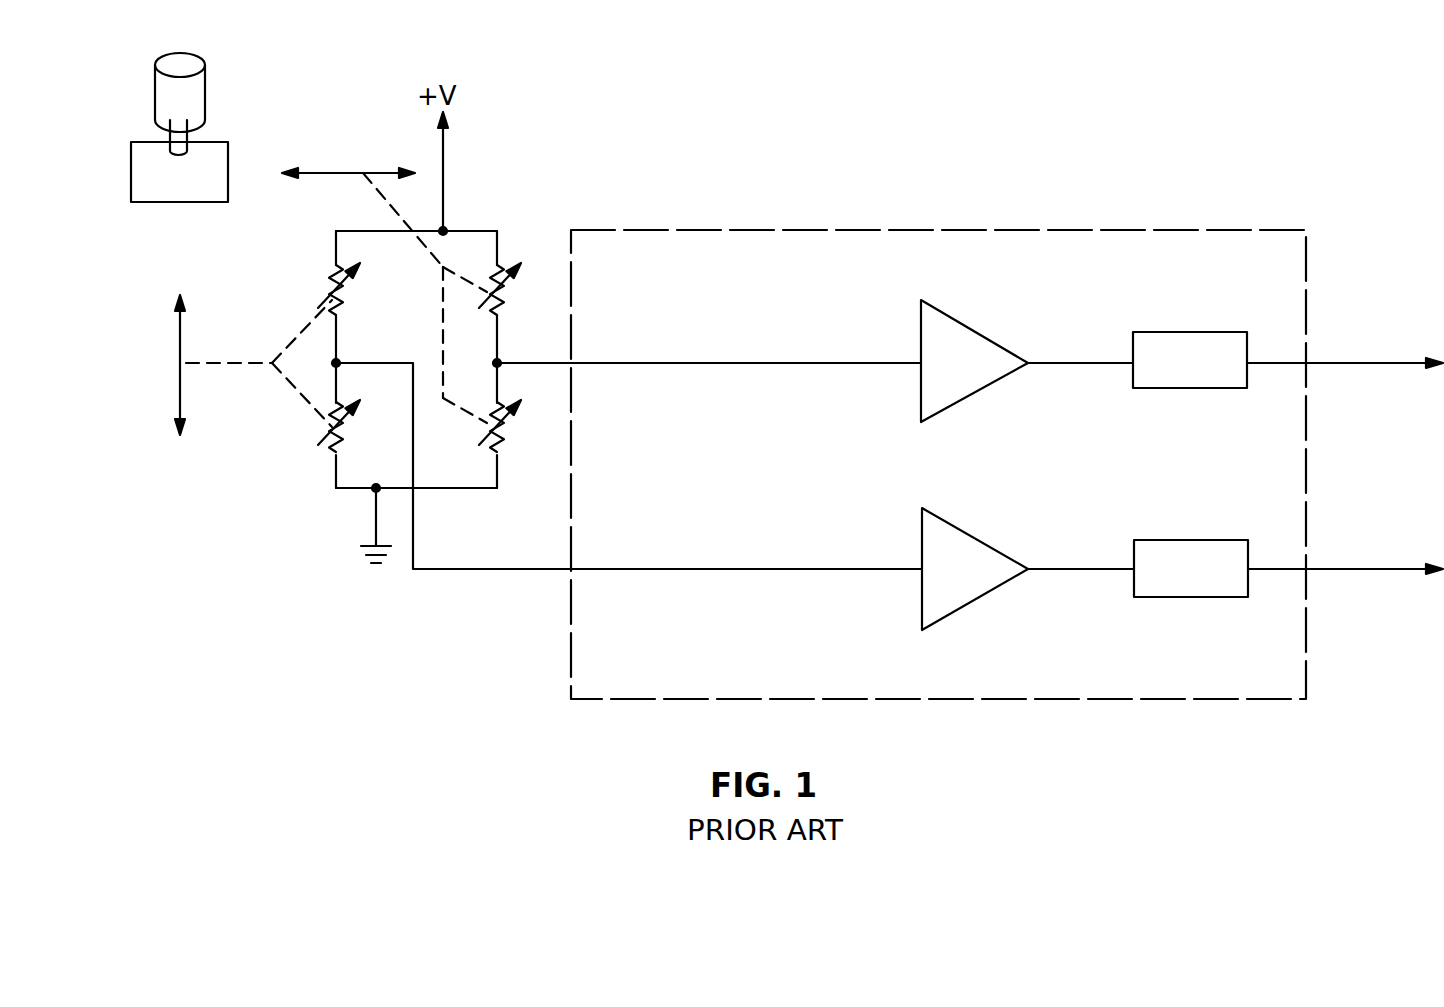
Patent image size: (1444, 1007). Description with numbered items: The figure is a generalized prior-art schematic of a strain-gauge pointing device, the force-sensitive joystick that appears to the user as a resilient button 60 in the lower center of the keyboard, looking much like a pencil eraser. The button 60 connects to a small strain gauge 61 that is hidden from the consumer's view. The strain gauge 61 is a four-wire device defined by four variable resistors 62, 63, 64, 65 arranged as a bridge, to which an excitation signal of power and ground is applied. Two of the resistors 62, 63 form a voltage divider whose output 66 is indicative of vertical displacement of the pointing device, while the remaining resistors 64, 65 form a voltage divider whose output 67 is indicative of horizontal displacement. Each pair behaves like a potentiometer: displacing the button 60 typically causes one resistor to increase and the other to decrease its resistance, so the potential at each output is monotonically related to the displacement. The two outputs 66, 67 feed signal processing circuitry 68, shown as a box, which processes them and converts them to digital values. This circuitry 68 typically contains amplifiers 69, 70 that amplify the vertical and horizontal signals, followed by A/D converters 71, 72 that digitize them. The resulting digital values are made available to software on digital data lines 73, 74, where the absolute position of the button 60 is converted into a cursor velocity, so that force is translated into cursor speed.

The button 60 is at (155, 87).
The strain gauge 61 is at (155, 193).
The variable resistor 62 is at (337, 278).
The variable resistor 63 is at (337, 447).
The variable resistor 64 is at (505, 263).
The variable resistor 65 is at (502, 447).
The output 66 is at (715, 570).
The output 67 is at (717, 364).
The signal processing circuitry 68 is at (865, 227).
The amplifier 69 is at (978, 332).
The amplifier 70 is at (973, 533).
The A/D converter 71 is at (1180, 332).
The A/D converter 72 is at (1173, 540).
The digital data line 73 is at (1357, 364).
The digital data line 74 is at (1368, 570).